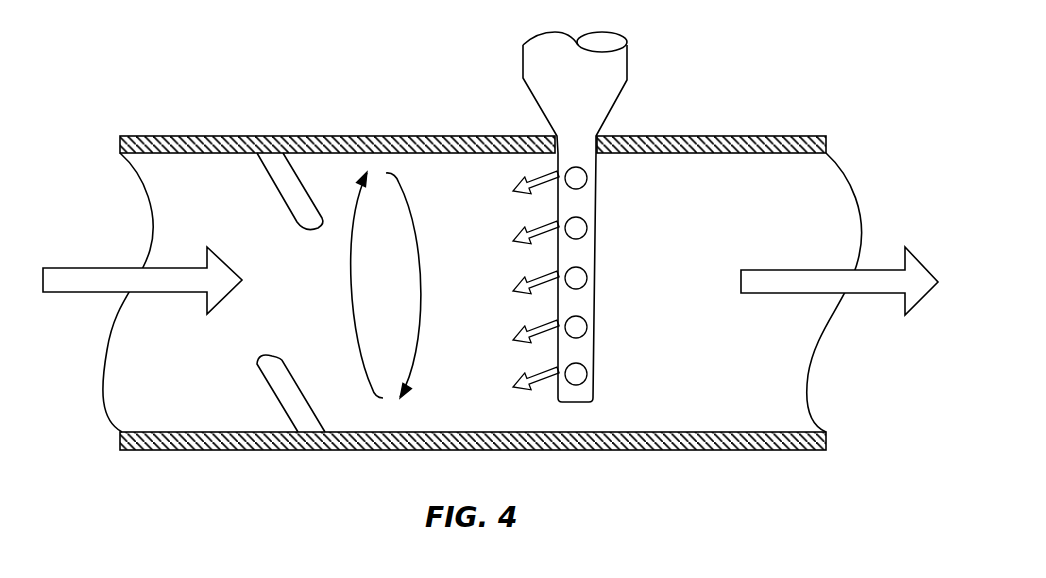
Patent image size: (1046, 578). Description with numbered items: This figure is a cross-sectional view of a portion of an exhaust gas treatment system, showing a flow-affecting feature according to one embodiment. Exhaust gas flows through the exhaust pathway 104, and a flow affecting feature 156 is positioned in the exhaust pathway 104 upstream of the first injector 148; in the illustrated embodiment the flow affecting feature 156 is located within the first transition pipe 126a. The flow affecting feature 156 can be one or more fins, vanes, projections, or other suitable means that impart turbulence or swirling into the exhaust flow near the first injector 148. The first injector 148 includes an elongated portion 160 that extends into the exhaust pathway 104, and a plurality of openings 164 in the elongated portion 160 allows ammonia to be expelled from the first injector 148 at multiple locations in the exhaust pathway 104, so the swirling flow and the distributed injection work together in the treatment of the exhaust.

The exhaust pathway 104 is at (337, 135).
The first transition pipe 126a is at (360, 451).
The first injector 148 is at (568, 217).
The flow affecting feature 156 is at (277, 188).
The elongated portion 160 is at (593, 210).
The openings 164 is at (587, 277).